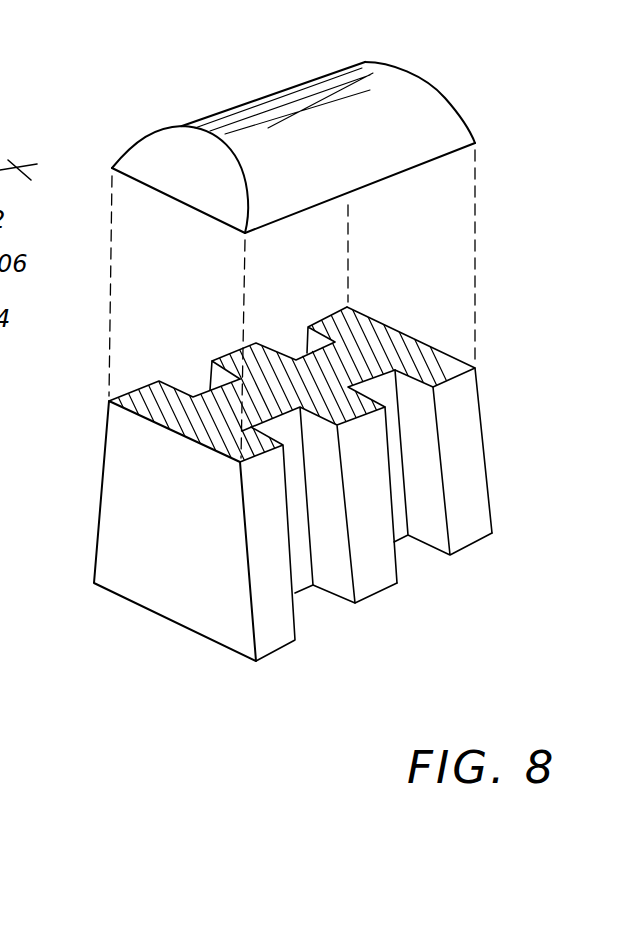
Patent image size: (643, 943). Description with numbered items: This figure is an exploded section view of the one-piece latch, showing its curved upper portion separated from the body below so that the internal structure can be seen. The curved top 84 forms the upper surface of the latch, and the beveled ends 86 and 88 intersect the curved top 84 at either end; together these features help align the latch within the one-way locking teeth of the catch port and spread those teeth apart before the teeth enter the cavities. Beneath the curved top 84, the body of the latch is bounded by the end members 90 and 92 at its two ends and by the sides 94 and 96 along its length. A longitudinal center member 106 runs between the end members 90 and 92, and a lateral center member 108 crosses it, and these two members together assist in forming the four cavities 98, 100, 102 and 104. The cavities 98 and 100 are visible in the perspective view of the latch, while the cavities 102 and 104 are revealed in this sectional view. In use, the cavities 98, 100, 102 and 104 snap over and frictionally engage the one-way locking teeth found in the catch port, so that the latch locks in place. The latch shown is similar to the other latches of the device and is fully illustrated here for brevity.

The curved top 84 is at (283, 108).
The beveled end 86 is at (155, 160).
The beveled end 88 is at (423, 107).
The end member 90 is at (115, 538).
The end member 92 is at (413, 337).
The side 94 is at (487, 457).
The side 96 is at (148, 391).
The cavity 98 is at (312, 602).
The cavity 100 is at (418, 560).
The cavity 102 is at (190, 378).
The cavity 104 is at (290, 337).
The longitudinal center member 106 is at (382, 389).
The lateral center member 108 is at (325, 457).